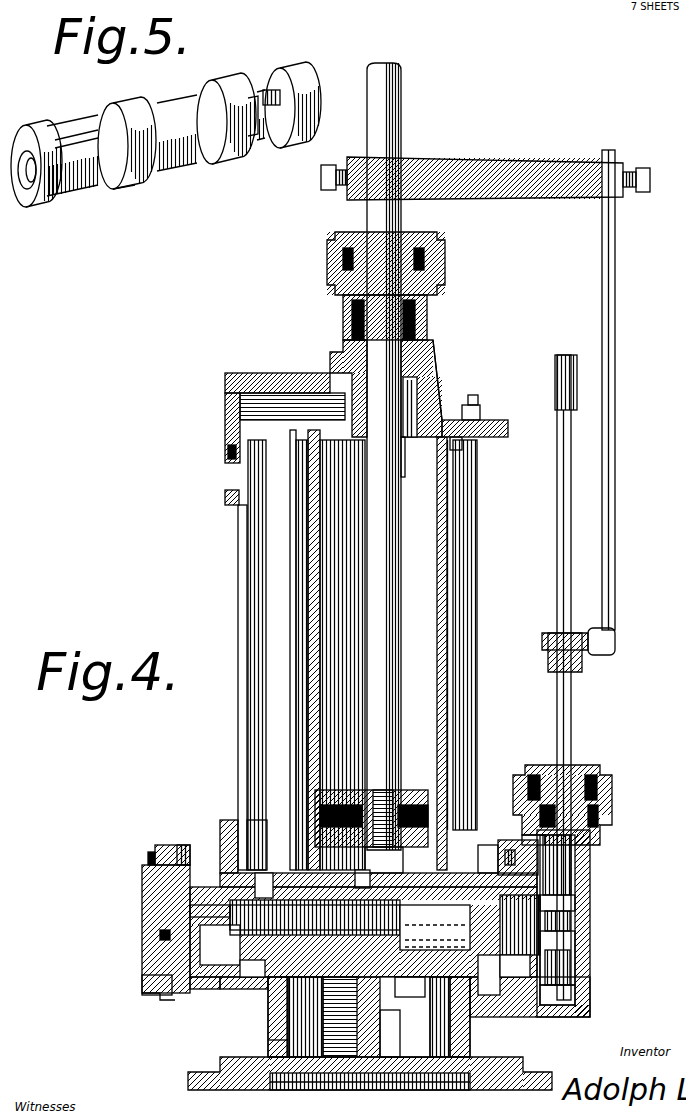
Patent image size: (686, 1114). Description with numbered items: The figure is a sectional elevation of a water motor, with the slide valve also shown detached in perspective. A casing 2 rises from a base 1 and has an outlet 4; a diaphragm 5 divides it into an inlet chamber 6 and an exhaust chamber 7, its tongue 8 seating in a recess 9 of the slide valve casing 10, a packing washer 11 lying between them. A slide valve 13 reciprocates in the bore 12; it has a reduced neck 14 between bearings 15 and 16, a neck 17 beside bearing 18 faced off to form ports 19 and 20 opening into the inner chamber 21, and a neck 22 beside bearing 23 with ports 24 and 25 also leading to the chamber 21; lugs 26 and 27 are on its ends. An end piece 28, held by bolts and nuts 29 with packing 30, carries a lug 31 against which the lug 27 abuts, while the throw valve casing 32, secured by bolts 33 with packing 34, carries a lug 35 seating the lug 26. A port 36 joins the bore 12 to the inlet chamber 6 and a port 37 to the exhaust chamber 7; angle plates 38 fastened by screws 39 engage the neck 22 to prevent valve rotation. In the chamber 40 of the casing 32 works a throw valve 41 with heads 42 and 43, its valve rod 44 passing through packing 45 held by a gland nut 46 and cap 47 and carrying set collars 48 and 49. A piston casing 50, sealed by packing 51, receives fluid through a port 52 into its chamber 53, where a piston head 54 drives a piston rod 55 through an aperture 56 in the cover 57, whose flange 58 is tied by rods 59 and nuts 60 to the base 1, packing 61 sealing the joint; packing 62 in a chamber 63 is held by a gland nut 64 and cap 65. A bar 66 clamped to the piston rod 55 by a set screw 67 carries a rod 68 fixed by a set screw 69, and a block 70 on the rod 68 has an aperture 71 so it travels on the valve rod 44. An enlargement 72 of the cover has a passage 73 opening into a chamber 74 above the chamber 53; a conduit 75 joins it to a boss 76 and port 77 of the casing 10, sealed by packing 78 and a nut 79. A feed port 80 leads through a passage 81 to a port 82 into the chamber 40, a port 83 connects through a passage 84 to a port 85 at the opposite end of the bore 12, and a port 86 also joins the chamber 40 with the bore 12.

In FIG. 4, the base 1 is at (193, 1072).
In FIG. 4, the casing 2 is at (276, 1020).
In FIG. 4, the outlet 4 is at (392, 1085).
In FIG. 4, the diaphragm 5 is at (372, 1080).
In FIG. 4, the inlet chamber 6 is at (276, 1042).
In FIG. 4, the exhaust chamber 7 is at (428, 1017).
In FIG. 4, the tongue 8 is at (322, 1017).
In FIG. 4, the recess 9 is at (388, 985).
In FIG. 4, the slide valve casing 10 is at (150, 995).
In FIG. 4, the packing washer 11 is at (270, 985).
In FIG. 4, the bore 12 is at (200, 945).
In FIG. 5, the slide valve 13 is at (136, 188).
In FIG. 5, the reduced neck 14 is at (190, 160).
In FIG. 4, the reduced neck 14 is at (315, 919).
In FIG. 5, the bearing 15 is at (228, 82).
In FIG. 4, the bearing 15 is at (258, 830).
In FIG. 5, the bearing 16 is at (140, 108).
In FIG. 4, the bearing 16 is at (372, 880).
In FIG. 5, the neck 17 is at (266, 145).
In FIG. 5, the bearing 18 is at (308, 94).
In FIG. 4, the bearing 18 is at (195, 985).
In FIG. 5, the port 19 is at (256, 96).
In FIG. 4, the port 19 is at (196, 855).
In FIG. 4, the port 20 is at (250, 975).
In FIG. 5, the inner chamber 21 is at (274, 90).
In FIG. 4, the inner chamber 21 is at (235, 985).
In FIG. 5, the neck 22 is at (90, 192).
In FIG. 5, the bearing 23 is at (40, 138).
In FIG. 4, the bearing 23 is at (488, 995).
In FIG. 5, the port 24 is at (70, 138).
In FIG. 4, the port 24 is at (435, 922).
In FIG. 4, the port 25 is at (450, 1017).
In FIG. 5, the lug 26 is at (27, 190).
In FIG. 4, the lug 26 is at (510, 978).
In FIG. 4, the lug 27 is at (155, 893).
In FIG. 4, the end piece 28 is at (142, 872).
In FIG. 4, the bolts and nuts 29 is at (148, 857).
In FIG. 4, the packing material 30 is at (170, 845).
In FIG. 4, the lug 31 is at (165, 918).
In FIG. 4, the throw valve casing 32 is at (590, 858).
In FIG. 4, the bolts 33 is at (500, 845).
In FIG. 4, the packing material 34 is at (512, 842).
In FIG. 4, the lug 35 is at (515, 1000).
In FIG. 4, the port 36 is at (272, 1000).
In FIG. 4, the port 37 is at (410, 987).
In FIG. 4, the angle plates 38 is at (435, 935).
In FIG. 4, the screws 39 is at (398, 1015).
In FIG. 4, the throw valve chamber 40 is at (600, 838).
In FIG. 4, the throw valve 41 is at (575, 945).
In FIG. 4, the head 42 is at (575, 995).
In FIG. 4, the head 43 is at (575, 900).
In FIG. 4, the valve rod 44 is at (571, 705).
In FIG. 4, the packing 45 is at (598, 815).
In FIG. 4, the gland nut 46 is at (588, 775).
In FIG. 4, the cap 47 is at (612, 780).
In FIG. 4, the set collar 48 is at (548, 660).
In FIG. 4, the set collar 49 is at (508, 428).
In FIG. 4, the piston casing 50 is at (450, 603).
In FIG. 4, the packing material 51 is at (485, 845).
In FIG. 4, the port 52 is at (382, 860).
In FIG. 4, the piston chamber 53 is at (448, 520).
In FIG. 4, the piston head 54 is at (395, 795).
In FIG. 4, the piston rod 55 is at (401, 105).
In FIG. 4, the aperture 56 is at (430, 348).
In FIG. 4, the cover 57 is at (438, 365).
In FIG. 4, the flange 58 is at (462, 445).
In FIG. 4, the rods 59 is at (477, 555).
In FIG. 4, the nuts 60 is at (480, 408).
In FIG. 4, the packing material 61 is at (408, 470).
In FIG. 4, the packing material 62 is at (430, 305).
In FIG. 4, the chamber 63 is at (428, 320).
In FIG. 4, the gland nut 64 is at (420, 240).
In FIG. 4, the cap 65 is at (424, 258).
In FIG. 4, the bar 66 is at (480, 162).
In FIG. 4, the set screw 67 is at (322, 178).
In FIG. 4, the rod 68 is at (603, 250).
In FIG. 4, the set screw 69 is at (651, 176).
In FIG. 4, the block 70 is at (615, 640).
In FIG. 4, the aperture 71 is at (548, 640).
In FIG. 4, the enlargement 72 is at (258, 378).
In FIG. 4, the passage 73 is at (300, 400).
In FIG. 4, the chamber 74 is at (417, 400).
In FIG. 4, the conduit 75 is at (238, 585).
In FIG. 4, the boss 76 is at (225, 828).
In FIG. 4, the port 77 is at (263, 873).
In FIG. 4, the packing material 78 is at (228, 450).
In FIG. 4, the nut 79 is at (226, 498).
In FIG. 4, the feed port 80 is at (315, 917).
In FIG. 4, the passage 81 is at (435, 927).
In FIG. 4, the port 82 is at (570, 920).
In FIG. 4, the port 83 is at (570, 968).
In FIG. 4, the passage 84 is at (142, 978).
In FIG. 4, the port 85 is at (160, 935).
In FIG. 4, the port 86 is at (575, 880).